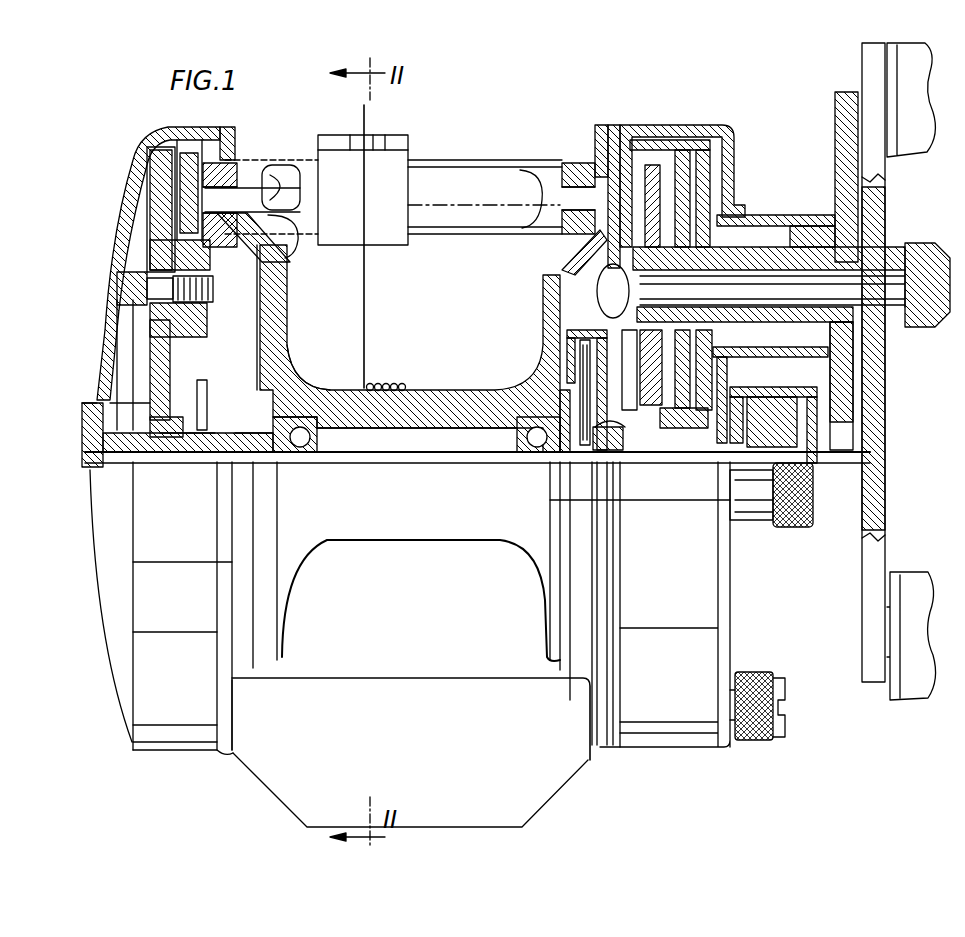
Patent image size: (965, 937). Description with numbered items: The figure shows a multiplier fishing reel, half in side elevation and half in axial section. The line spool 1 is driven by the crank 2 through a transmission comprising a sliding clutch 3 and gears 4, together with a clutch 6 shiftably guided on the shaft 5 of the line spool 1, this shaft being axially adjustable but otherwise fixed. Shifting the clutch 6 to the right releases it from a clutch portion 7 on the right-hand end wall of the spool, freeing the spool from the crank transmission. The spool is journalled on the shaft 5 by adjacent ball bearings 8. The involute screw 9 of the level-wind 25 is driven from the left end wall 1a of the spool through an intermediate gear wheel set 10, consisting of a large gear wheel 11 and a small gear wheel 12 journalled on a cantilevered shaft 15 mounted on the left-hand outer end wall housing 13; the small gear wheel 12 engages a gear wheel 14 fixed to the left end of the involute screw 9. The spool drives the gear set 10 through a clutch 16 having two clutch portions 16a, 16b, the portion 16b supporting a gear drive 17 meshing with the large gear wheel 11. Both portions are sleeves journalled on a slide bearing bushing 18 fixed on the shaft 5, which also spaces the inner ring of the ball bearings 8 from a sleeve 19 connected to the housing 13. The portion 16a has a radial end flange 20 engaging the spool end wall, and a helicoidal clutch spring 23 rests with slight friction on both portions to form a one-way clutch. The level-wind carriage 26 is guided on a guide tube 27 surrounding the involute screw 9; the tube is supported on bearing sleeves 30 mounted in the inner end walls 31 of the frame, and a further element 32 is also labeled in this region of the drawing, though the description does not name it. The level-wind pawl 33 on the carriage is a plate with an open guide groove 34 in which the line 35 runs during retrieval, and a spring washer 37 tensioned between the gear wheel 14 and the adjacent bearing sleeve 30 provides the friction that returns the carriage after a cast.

The line spool 1 is at (467, 403).
The left end wall of the line spool 1a is at (278, 313).
The crank 2 is at (878, 487).
The sliding clutch 3 is at (724, 188).
The gears 4 is at (655, 161).
The shaft of the line spool 5 is at (457, 460).
The clutch 6 is at (620, 450).
The clutch portion 7 is at (587, 453).
The ball bearings 8 is at (310, 455).
The involute screw 9 is at (273, 170).
The intermediate gear wheel set 10 is at (148, 377).
The large gear wheel 11 is at (150, 160).
The small gear wheel 12 is at (207, 303).
The left-hand outer end wall housing 13 is at (117, 313).
The gear wheel 14 is at (190, 160).
The cantilevered shaft 15 is at (140, 288).
The clutch 16 is at (230, 421).
The clutch portion 16a is at (250, 458).
The clutch portion 16b is at (173, 457).
The gear drive 17 is at (177, 417).
The slide bearing bushing 18 is at (197, 457).
The sleeve 19 is at (123, 460).
The radial end flange 20 is at (288, 392).
The clutch spring 23 is at (203, 430).
The level-wind 25 is at (413, 147).
The carriage 26 is at (390, 187).
The guide tube 27 is at (480, 167).
The bearing sleeves 30 is at (267, 240).
The inner end walls 31 is at (217, 132).
The worm gear 32 is at (260, 167).
The level-wind pawl 33 is at (333, 142).
The guide groove 34 is at (370, 142).
The line 35 is at (366, 283).
The spring washer 37 is at (233, 140).